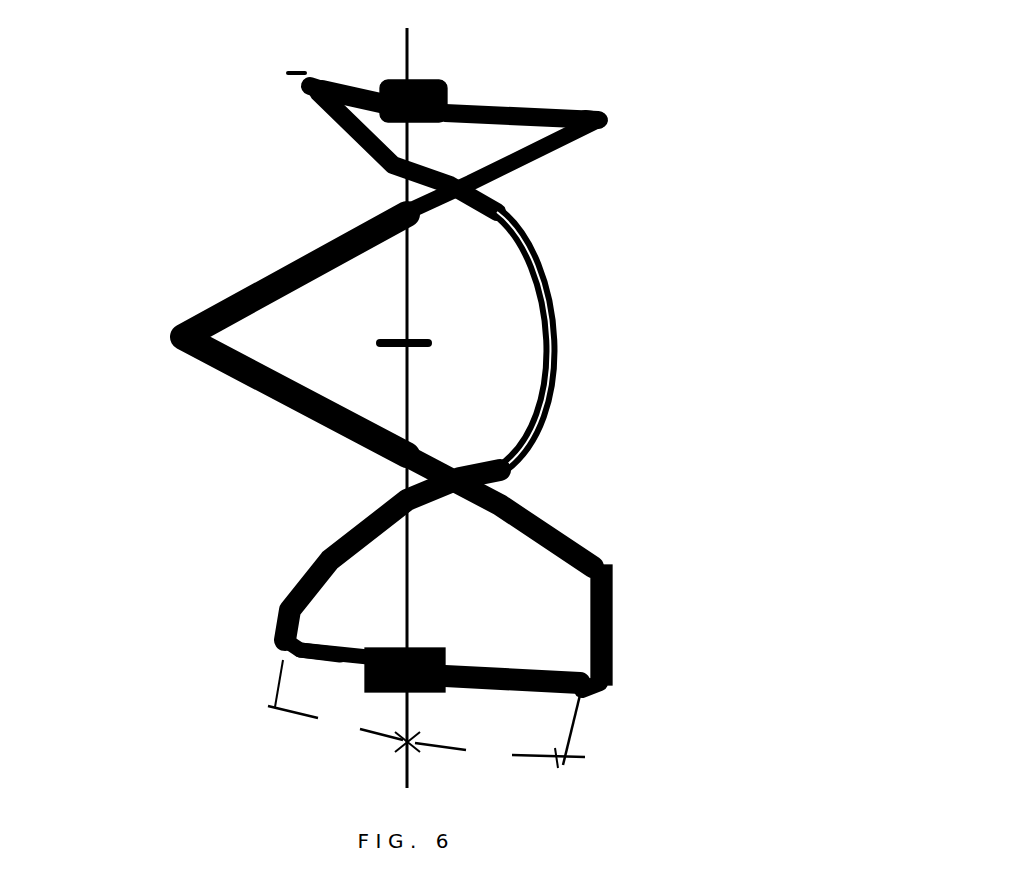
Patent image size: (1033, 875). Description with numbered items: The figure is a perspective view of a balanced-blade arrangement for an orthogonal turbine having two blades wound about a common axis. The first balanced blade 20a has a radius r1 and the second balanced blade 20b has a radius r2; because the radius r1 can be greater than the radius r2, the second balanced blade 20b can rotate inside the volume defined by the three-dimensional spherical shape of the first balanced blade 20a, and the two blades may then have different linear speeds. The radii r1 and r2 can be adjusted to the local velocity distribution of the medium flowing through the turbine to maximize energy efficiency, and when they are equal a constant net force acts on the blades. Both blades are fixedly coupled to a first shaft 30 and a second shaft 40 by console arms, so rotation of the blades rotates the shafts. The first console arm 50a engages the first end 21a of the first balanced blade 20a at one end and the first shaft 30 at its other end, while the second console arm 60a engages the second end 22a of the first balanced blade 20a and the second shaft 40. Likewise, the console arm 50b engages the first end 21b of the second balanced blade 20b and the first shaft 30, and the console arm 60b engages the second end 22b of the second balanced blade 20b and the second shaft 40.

The first balanced blade 20a is at (530, 180).
The second balanced blade 20b is at (565, 368).
The first end of the first balanced blade 21a is at (590, 135).
The first end of the second balanced blade 21b is at (332, 128).
The second end of the first balanced blade 22a is at (598, 662).
The second end of the second balanced blade 22b is at (283, 640).
The first shaft 30 is at (422, 80).
The second shaft 40 is at (423, 650).
The first console arm 50a is at (580, 688).
The first console arm of the second blade 50b is at (330, 660).
The second console arm 60a is at (530, 110).
The second console arm of the second blade 60b is at (330, 100).
The radius of the first balanced blade r1 is at (500, 731).
The radius of the second balanced blade r2 is at (344, 706).